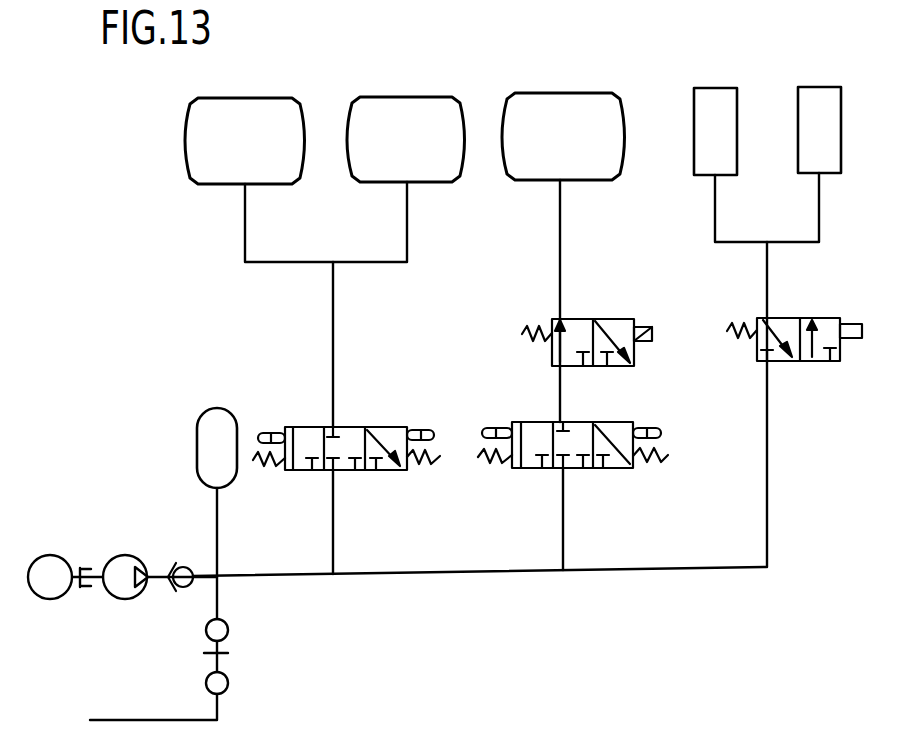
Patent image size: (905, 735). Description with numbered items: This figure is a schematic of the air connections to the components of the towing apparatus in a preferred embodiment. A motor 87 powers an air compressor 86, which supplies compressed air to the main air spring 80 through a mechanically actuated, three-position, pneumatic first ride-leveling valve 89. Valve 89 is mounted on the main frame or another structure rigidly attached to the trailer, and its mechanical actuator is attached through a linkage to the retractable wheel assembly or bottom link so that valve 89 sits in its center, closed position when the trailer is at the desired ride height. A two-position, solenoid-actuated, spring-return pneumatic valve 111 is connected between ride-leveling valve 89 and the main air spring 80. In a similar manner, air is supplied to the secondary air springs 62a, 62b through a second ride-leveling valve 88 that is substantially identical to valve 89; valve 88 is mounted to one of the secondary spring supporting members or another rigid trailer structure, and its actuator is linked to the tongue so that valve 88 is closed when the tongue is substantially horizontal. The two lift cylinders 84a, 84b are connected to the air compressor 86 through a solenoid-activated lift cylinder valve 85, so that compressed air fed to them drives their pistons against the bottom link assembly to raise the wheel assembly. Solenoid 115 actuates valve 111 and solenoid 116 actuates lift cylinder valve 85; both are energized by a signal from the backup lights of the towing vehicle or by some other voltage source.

The secondary air spring 62a is at (404, 112).
The secondary air spring 62b is at (245, 112).
The main air spring 80 is at (560, 110).
The hydraulic lift cylinder 84a is at (818, 100).
The hydraulic lift cylinder 84b is at (715, 102).
The lift cylinder valve 85 is at (818, 330).
The air compressor 86 is at (122, 566).
The motor 87 is at (55, 566).
The second ride-leveling valve 88 is at (355, 436).
The first ride-leveling valve 89 is at (622, 430).
The pneumatic valve 111 is at (576, 326).
The solenoid 115 is at (650, 330).
The solenoid 116 is at (850, 330).